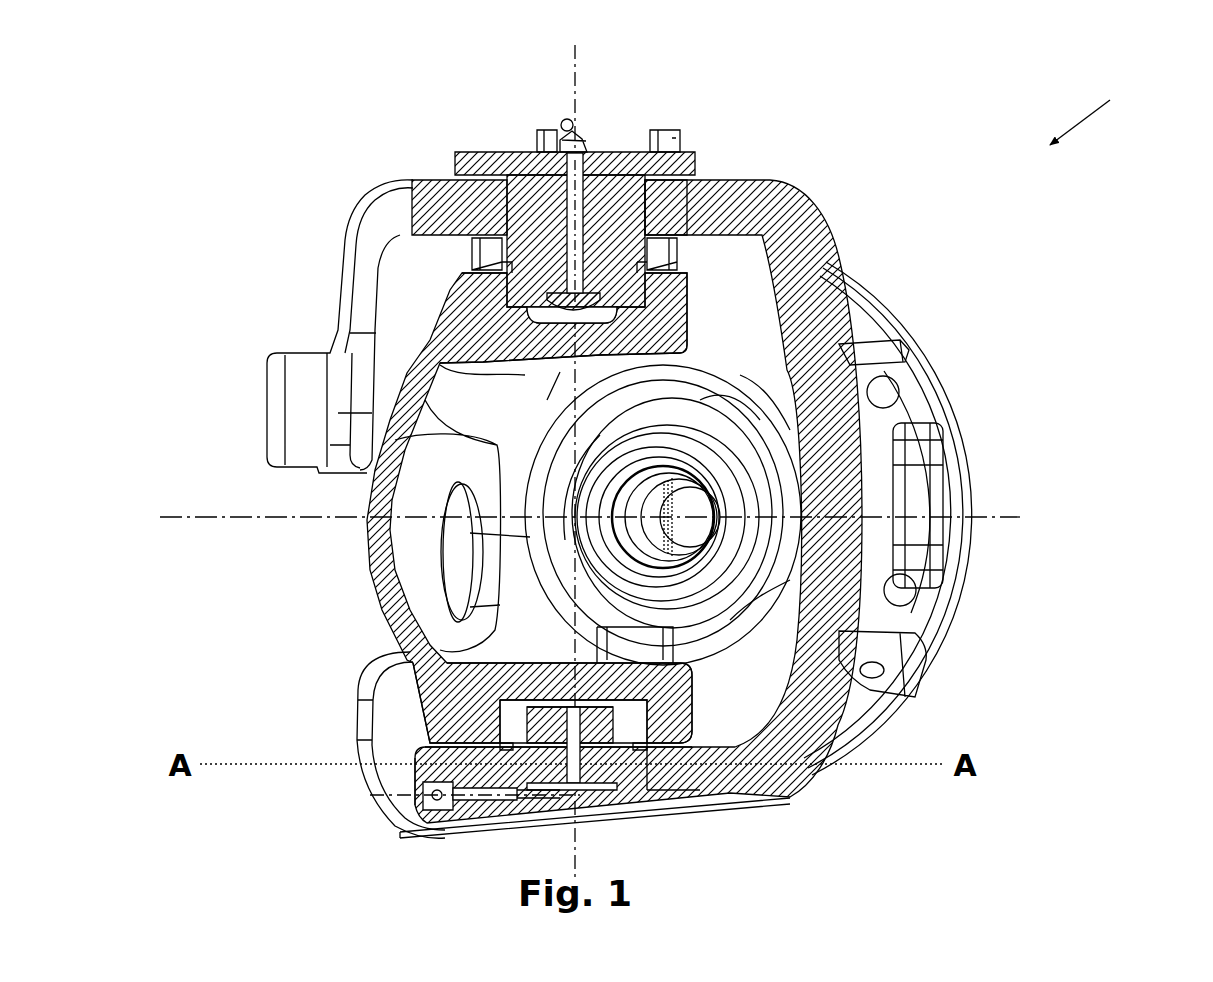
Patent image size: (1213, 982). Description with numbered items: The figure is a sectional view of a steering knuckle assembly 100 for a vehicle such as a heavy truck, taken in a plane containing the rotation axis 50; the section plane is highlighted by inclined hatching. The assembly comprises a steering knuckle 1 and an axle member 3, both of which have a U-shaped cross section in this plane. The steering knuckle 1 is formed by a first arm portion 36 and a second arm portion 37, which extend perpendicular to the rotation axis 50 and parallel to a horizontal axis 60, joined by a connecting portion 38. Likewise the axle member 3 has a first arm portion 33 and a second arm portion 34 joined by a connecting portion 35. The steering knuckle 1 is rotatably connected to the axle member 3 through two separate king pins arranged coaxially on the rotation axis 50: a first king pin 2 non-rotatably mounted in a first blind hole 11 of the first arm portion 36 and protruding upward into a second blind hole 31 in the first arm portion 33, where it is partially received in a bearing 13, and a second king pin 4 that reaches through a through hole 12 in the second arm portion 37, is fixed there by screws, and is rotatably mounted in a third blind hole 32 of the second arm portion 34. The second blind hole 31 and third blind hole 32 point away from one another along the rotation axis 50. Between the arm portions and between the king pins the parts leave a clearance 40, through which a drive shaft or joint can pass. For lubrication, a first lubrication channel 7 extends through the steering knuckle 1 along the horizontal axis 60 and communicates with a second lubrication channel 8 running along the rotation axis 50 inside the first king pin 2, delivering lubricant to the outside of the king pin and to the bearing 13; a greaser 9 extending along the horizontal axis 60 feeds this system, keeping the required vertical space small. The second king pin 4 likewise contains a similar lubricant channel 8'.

The steering knuckle 1 is at (806, 345).
The first king pin 2 is at (610, 770).
The axle member 3 is at (375, 540).
The second king pin 4 is at (533, 192).
The first lubrication channel 7 is at (483, 797).
The second lubrication channel 8 is at (518, 831).
The lubricant channel 8' is at (631, 171).
The greaser 9 is at (425, 812).
The first blind hole 11 is at (660, 800).
The through hole 12 is at (652, 200).
The bearing 13 is at (507, 713).
The second blind hole 31 is at (513, 693).
The third blind hole 32 is at (513, 313).
The first arm portion 33 is at (740, 790).
The second arm portion 34 is at (657, 323).
The connecting portion 35 is at (365, 490).
The first arm portion 36 is at (800, 796).
The second arm portion 37 is at (745, 200).
The connecting portion 38 is at (830, 460).
The clearance 40 is at (612, 548).
The rotation axis 50 is at (575, 442).
The horizontal axis 60 is at (619, 517).
The steering knuckle assembly 100 is at (1115, 106).